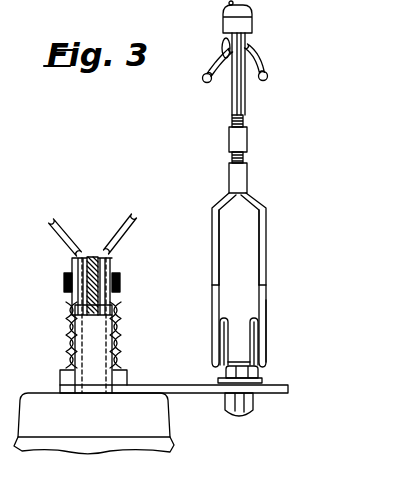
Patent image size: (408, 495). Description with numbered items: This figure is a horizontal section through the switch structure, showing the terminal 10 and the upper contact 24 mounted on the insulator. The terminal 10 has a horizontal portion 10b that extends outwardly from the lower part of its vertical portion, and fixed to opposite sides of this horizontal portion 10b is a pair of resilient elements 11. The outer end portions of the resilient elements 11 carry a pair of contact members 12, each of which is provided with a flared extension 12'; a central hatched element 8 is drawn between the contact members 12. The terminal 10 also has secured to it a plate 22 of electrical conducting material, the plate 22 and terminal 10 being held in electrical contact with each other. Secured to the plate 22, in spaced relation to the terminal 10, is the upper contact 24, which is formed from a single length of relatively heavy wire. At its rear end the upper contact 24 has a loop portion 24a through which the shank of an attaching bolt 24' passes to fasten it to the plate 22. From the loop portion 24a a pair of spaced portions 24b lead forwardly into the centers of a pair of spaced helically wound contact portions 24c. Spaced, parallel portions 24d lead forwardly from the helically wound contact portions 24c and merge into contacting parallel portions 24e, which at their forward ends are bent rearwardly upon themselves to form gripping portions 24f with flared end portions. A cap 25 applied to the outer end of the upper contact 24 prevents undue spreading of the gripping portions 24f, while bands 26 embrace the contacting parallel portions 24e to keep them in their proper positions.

The central post 8 is at (92, 257).
The terminal 10 is at (87, 396).
The horizontal portion 10b is at (97, 347).
The resilient elements 11 is at (66, 326).
The contact members 12 is at (98, 279).
The flared extensions 12' is at (108, 229).
The plate 22 is at (195, 394).
The upper contact 24 is at (228, 263).
The attaching bolt 24' is at (214, 391).
The loop portion 24a is at (263, 384).
The spaced portions 24b is at (249, 327).
The helically wound contact portions 24c is at (265, 343).
The spaced parallel portions 24d is at (259, 227).
The contacting parallel portions 24e is at (234, 112).
The gripping portions 24f is at (261, 52).
The cap 25 is at (244, 21).
The bands 26 is at (246, 166).